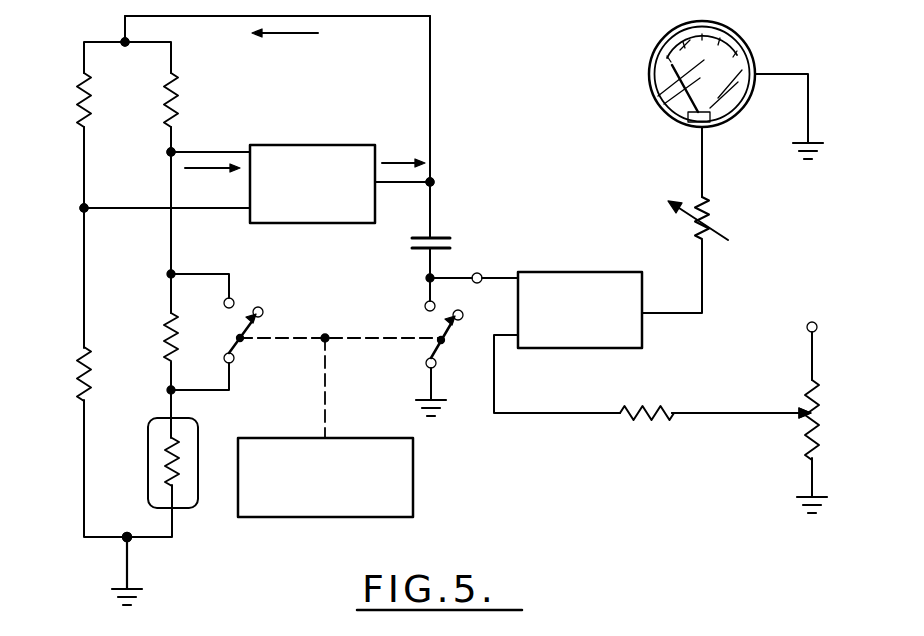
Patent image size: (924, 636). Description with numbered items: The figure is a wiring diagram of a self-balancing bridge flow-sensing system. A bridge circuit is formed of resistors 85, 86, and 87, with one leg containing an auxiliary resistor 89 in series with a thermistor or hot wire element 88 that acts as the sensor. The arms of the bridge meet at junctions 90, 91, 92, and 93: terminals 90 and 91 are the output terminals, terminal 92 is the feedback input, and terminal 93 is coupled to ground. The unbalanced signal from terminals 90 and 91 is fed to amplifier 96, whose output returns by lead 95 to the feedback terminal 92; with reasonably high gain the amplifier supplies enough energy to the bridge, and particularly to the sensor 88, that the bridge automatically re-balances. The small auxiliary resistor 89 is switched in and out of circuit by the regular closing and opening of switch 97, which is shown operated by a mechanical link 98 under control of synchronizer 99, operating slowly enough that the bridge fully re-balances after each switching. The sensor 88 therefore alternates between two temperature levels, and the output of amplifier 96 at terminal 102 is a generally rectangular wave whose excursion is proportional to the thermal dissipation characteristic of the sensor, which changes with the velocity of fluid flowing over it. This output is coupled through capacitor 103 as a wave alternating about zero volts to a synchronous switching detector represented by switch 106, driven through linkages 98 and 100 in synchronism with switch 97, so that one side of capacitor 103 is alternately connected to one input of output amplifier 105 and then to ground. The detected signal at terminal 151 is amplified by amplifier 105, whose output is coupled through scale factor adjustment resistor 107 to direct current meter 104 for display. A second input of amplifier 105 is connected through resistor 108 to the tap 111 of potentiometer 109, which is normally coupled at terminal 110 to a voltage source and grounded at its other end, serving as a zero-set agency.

The resistor 85 is at (82, 108).
The resistor 86 is at (82, 372).
The resistor 87 is at (178, 110).
The thermistor or hot wire element 88 is at (148, 472).
The auxiliary resistor 89 is at (168, 327).
The bridge junction (output terminal) 90 is at (84, 208).
The bridge junction (output terminal) 91 is at (170, 152).
The bridge junction (feedback input terminal) 92 is at (124, 42).
The bridge junction (ground terminal) 93 is at (130, 538).
The lead 95 is at (356, 17).
The amplifier 96 is at (304, 145).
The switch 97 is at (246, 306).
The mechanical link 98 is at (278, 338).
The synchronizer 99 is at (274, 438).
The linkage 100 is at (372, 340).
The output terminal 102 is at (434, 182).
The capacitor 103 is at (450, 240).
The direct current meter 104 is at (648, 72).
The output amplifier 105 is at (606, 272).
The switch (synchronous switching detector) 106 is at (437, 326).
The scale factor adjustment resistor 107 is at (712, 220).
The resistor 108 is at (648, 424).
The potentiometer 109 is at (800, 406).
The terminal 110 is at (812, 322).
The tap 111 is at (772, 416).
The terminal 151 is at (482, 276).